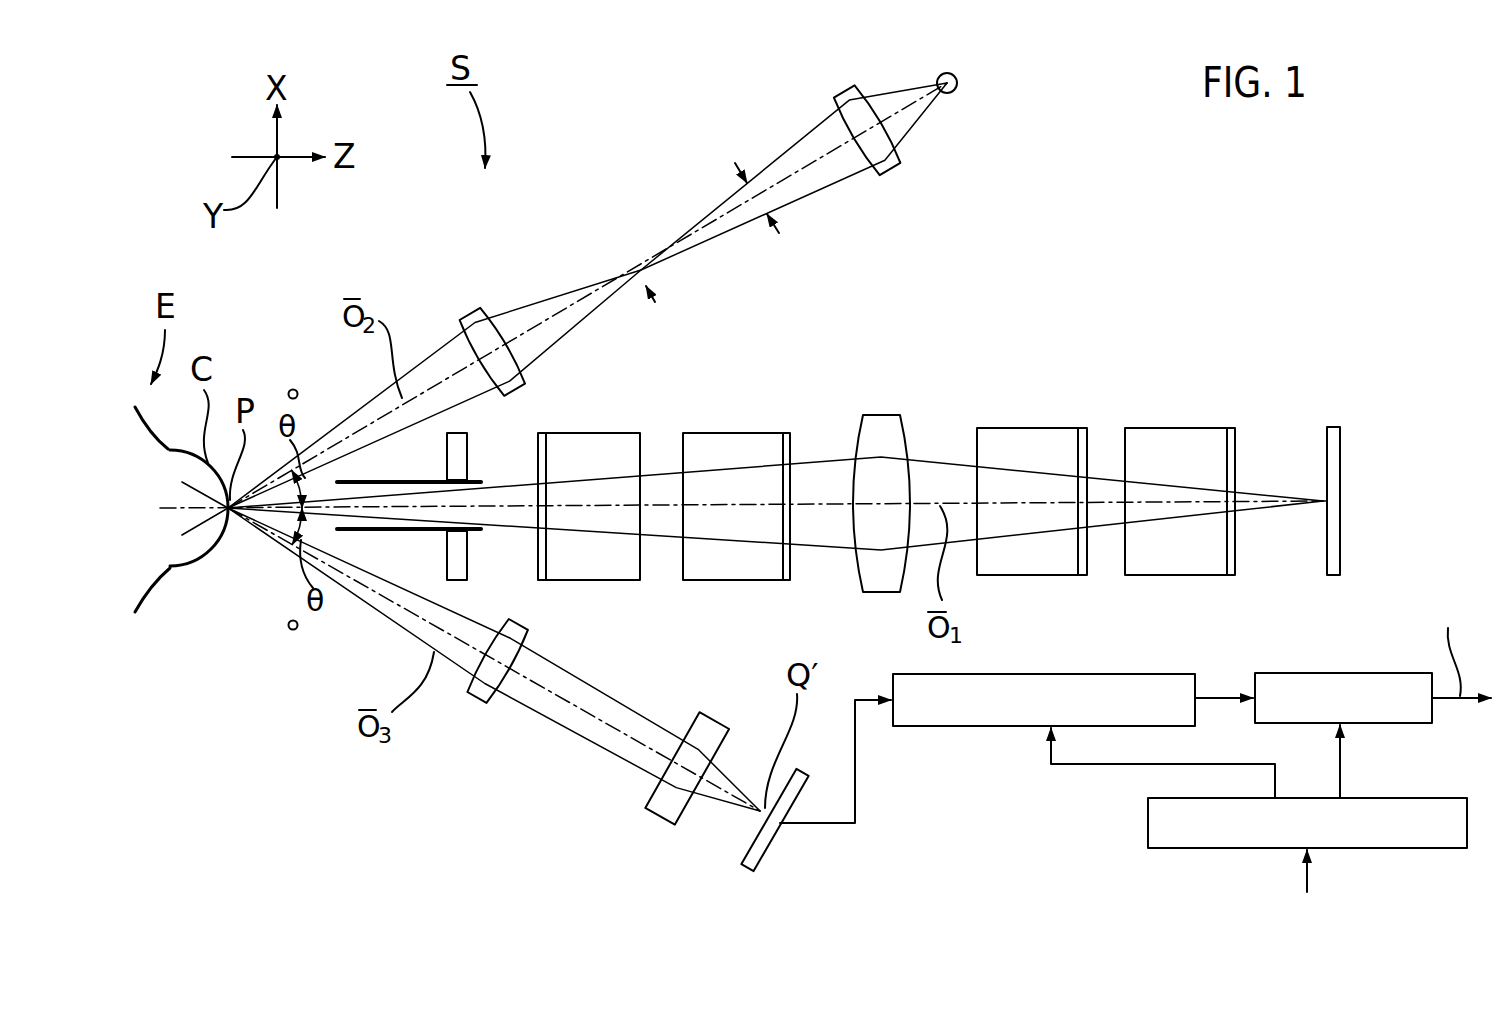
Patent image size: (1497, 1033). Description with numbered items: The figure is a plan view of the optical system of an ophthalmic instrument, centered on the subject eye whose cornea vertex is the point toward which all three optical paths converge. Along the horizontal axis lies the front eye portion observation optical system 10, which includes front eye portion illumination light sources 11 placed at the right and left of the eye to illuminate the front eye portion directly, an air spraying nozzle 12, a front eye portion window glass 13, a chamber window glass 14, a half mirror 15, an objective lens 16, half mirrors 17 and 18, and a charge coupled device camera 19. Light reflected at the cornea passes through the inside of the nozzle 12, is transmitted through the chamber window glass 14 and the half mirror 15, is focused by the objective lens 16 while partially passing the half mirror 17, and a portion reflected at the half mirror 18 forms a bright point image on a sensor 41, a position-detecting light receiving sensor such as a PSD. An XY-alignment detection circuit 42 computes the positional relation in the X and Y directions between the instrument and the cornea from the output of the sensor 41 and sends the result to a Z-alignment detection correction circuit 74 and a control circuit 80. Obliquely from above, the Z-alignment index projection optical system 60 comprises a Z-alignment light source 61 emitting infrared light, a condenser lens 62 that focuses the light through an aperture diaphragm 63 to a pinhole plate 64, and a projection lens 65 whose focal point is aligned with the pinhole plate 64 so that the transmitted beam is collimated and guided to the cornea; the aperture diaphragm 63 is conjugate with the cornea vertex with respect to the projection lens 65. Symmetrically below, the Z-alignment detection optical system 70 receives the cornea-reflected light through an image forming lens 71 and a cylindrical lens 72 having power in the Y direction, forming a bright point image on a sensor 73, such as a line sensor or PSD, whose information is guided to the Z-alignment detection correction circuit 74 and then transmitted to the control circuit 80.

The front eye portion observation optical system 10 is at (821, 368).
The front eye portion illumination light sources 11 is at (293, 389).
The air spraying nozzle 12 is at (418, 480).
The front eye portion window glass 13 is at (470, 463).
The chamber window glass 14 is at (628, 433).
The half mirror 15 is at (740, 433).
The objective lens 16 is at (888, 415).
The half mirror 17 is at (1030, 428).
The half mirror 18 is at (1185, 428).
The charge coupled device (CCD) camera 19 is at (1335, 427).
The sensor 41 is at (1307, 885).
The XY-alignment detection circuit 42 is at (1431, 798).
The Z-alignment index projection optical system 60 is at (661, 112).
The Z-alignment light source 61 is at (958, 92).
The condenser lens 62 is at (855, 95).
The aperture diaphragm 63 is at (735, 163).
The pinhole plate 64 is at (620, 250).
The projection lens 65 is at (479, 307).
The Z-alignment detection optical system 70 is at (563, 796).
The image forming lens 71 is at (492, 698).
The cylindrical lens 72 is at (661, 820).
The sensor 73 is at (742, 860).
The Z-alignment detection correction circuit 74 is at (1073, 674).
The control circuit 80 is at (1357, 673).